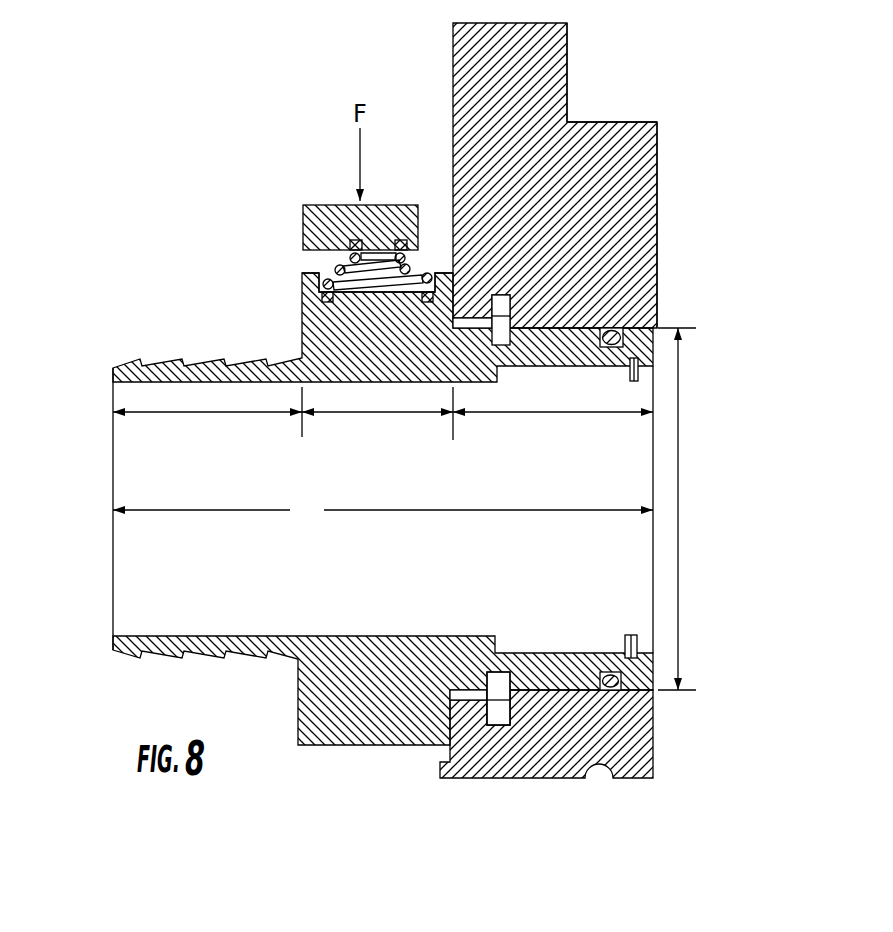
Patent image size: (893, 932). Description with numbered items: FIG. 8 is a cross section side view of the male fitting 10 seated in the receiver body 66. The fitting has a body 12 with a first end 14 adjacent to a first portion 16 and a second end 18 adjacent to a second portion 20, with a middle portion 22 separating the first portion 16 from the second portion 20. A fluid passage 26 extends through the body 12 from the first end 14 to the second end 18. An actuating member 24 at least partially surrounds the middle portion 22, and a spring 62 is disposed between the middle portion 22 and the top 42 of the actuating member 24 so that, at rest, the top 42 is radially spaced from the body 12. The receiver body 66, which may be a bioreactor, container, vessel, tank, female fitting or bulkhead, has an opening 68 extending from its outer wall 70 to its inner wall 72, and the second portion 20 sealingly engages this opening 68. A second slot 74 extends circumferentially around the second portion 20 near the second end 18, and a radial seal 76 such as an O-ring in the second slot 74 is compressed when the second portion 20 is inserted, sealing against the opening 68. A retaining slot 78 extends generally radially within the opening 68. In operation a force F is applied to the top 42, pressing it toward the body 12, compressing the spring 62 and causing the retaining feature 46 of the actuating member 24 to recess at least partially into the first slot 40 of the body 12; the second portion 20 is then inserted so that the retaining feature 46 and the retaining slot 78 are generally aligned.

The male fitting 10 is at (131, 272).
The body 12 is at (378, 648).
The first end 14 is at (113, 523).
The first portion 16 is at (230, 415).
The second end 18 is at (655, 655).
The second portion 20 is at (567, 413).
The middle portion 22 is at (392, 415).
The actuating member 24 is at (329, 200).
The fluid passage 26 is at (322, 521).
The first slot 40 is at (497, 683).
The top 42 is at (384, 203).
The retaining feature 46 is at (508, 331).
The spring 62 is at (355, 270).
The receiver body 66 is at (582, 145).
The opening 68 is at (648, 328).
The outer wall 70 is at (453, 70).
The inner wall 72 is at (656, 230).
The second slot 74 is at (621, 678).
The radial seal 76 is at (600, 766).
The retaining slot 78 is at (497, 296).